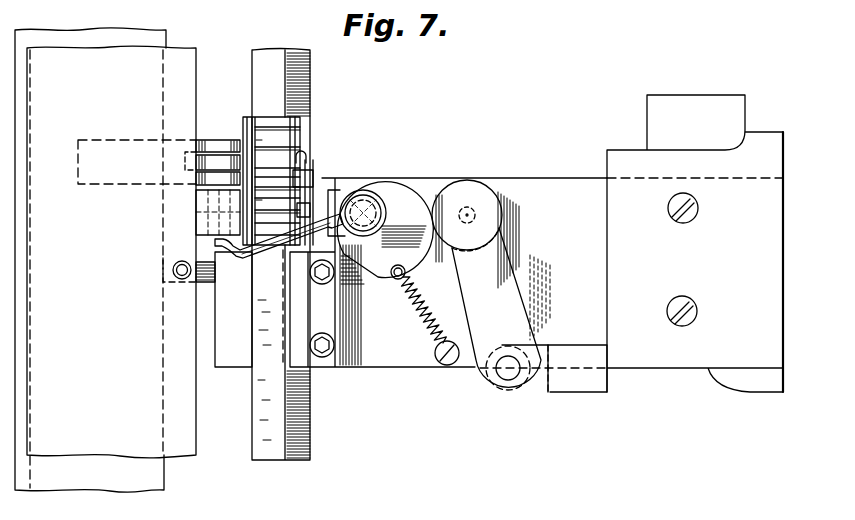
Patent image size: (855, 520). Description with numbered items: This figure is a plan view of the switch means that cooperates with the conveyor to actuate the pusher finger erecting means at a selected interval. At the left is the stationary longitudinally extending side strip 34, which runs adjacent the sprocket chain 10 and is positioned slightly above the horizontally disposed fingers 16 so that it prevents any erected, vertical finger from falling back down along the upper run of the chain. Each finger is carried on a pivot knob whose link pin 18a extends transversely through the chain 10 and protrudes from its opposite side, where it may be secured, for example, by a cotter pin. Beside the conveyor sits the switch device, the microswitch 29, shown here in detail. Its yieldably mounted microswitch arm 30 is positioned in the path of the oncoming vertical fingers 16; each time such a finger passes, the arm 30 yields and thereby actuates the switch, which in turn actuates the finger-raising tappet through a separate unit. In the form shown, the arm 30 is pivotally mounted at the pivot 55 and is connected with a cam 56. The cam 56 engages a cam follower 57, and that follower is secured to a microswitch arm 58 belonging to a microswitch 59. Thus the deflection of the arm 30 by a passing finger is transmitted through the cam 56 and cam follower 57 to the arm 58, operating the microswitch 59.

The sprocket chain 10 is at (252, 117).
The fingers 16 is at (203, 210).
The link pin 18a is at (318, 222).
The microswitch 29 is at (405, 148).
The microswitch arm 30 is at (226, 253).
The side strip 34 is at (197, 488).
The pivot 55 is at (377, 195).
The cam 56 is at (377, 278).
The cam follower 57 is at (477, 188).
The microswitch arm 58 is at (500, 281).
The microswitch 59 is at (572, 348).